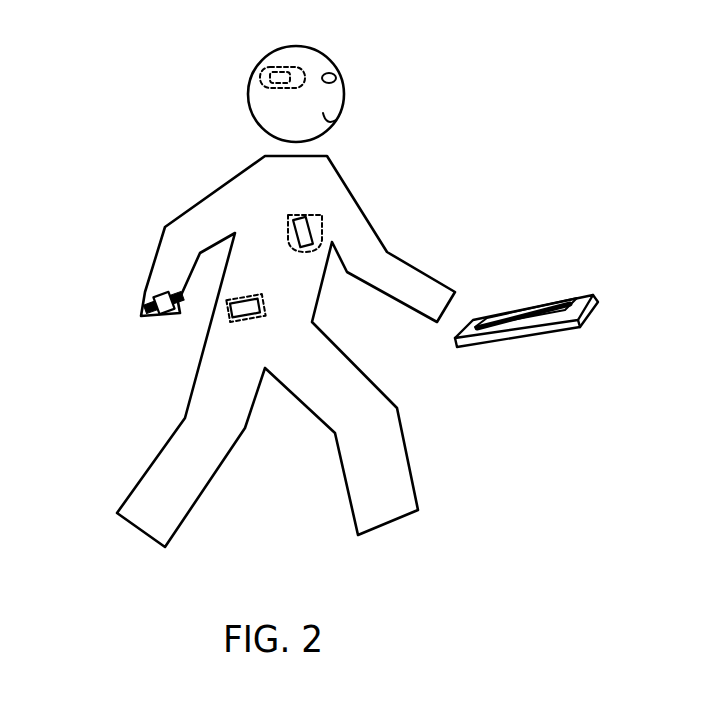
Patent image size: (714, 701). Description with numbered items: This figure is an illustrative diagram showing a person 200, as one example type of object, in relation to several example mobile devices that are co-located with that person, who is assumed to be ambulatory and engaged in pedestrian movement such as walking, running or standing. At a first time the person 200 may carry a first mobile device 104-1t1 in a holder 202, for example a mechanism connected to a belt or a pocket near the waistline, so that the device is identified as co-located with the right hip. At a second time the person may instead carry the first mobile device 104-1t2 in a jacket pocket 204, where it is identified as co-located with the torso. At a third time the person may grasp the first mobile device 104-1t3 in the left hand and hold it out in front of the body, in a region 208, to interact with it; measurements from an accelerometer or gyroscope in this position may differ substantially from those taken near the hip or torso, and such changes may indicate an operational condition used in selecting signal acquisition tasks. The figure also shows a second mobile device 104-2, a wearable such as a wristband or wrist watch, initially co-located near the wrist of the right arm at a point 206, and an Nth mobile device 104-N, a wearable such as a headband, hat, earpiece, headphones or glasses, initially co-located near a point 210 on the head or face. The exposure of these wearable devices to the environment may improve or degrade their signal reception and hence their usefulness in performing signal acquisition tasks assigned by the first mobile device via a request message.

The person 200 is at (152, 76).
The point on the person's head or face 210 is at (268, 85).
The Nth mobile device 104-N is at (281, 78).
The jacket pocket 204 is at (298, 215).
The first mobile device at time t2 104-1t2 is at (302, 240).
The holder 202 is at (245, 297).
The first mobile device at time t1 104-1t1 is at (247, 309).
The point near the wrist 206 is at (143, 308).
The second mobile device 104-2 is at (157, 293).
The region in front of the body 208 is at (472, 285).
The first mobile device at time t3 104-1t3 is at (531, 354).